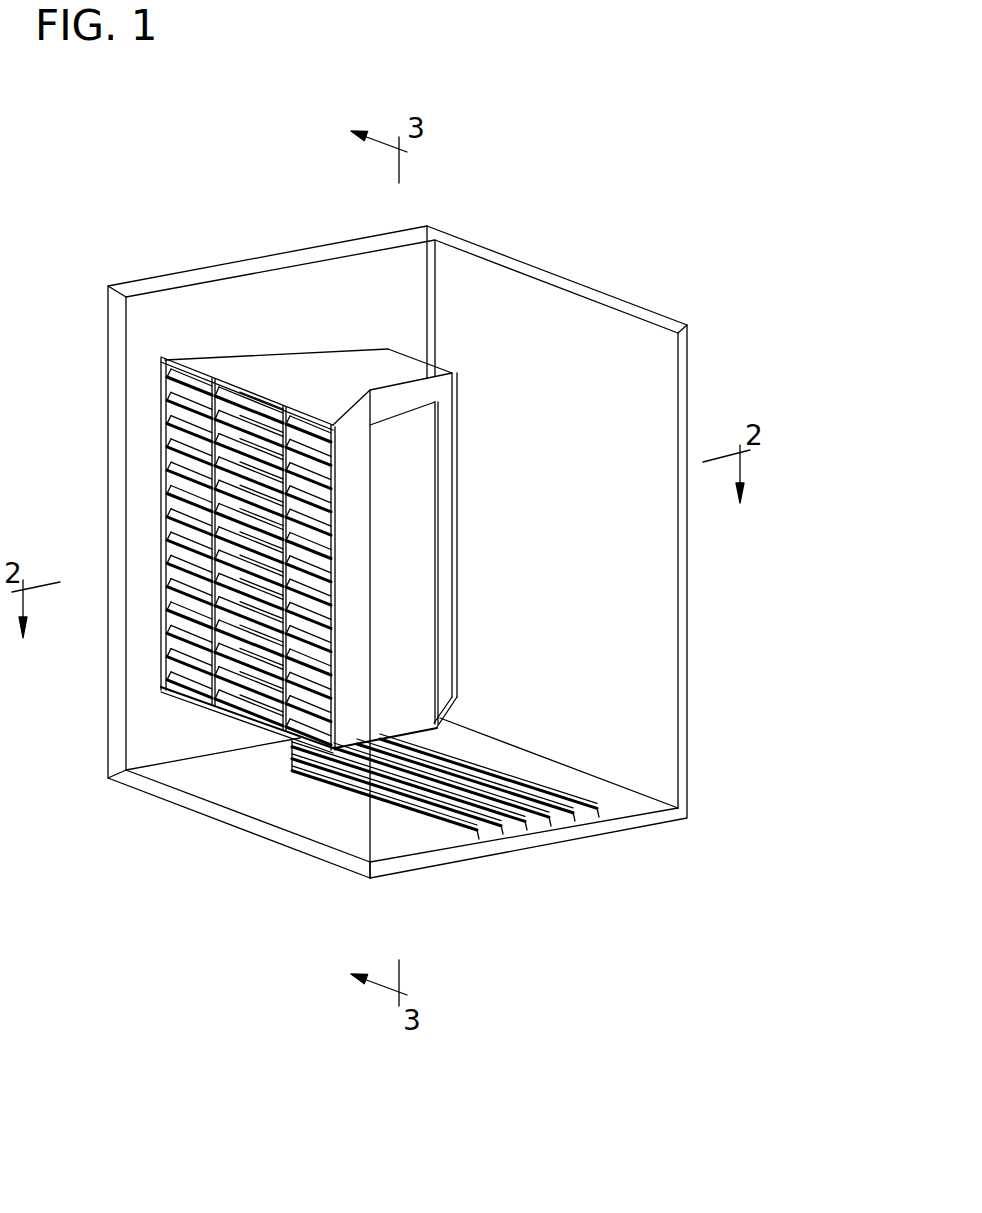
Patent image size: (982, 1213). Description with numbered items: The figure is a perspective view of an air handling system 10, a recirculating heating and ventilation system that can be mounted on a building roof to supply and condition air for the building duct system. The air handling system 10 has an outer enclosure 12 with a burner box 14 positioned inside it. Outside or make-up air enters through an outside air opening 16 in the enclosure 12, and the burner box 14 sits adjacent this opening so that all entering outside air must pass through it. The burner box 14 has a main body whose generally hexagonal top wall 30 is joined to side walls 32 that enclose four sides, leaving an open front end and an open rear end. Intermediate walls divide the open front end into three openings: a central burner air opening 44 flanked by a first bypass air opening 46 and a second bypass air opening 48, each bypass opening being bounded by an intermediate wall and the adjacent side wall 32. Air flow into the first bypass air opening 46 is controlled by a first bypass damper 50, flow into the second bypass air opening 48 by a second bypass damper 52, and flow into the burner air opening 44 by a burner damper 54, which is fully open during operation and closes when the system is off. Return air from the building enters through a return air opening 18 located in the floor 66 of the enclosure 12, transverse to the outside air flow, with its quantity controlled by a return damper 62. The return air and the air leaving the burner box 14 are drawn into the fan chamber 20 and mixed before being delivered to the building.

The air handling system 10 is at (680, 155).
The outer enclosure 12 is at (687, 588).
The burner box 14 is at (347, 776).
The outside air opening 16 is at (163, 450).
The return air opening 18 is at (437, 820).
The fan chamber 20 is at (609, 532).
The top wall 30 is at (389, 379).
The side walls 32 is at (414, 568).
The burner air opening 44 is at (177, 557).
The first bypass air opening 46 is at (205, 718).
The second bypass air opening 48 is at (168, 512).
The first bypass damper 50 is at (307, 430).
The second bypass damper 52 is at (188, 385).
The burner damper 54 is at (237, 418).
The return damper 62 is at (503, 812).
The floor 66 is at (337, 818).